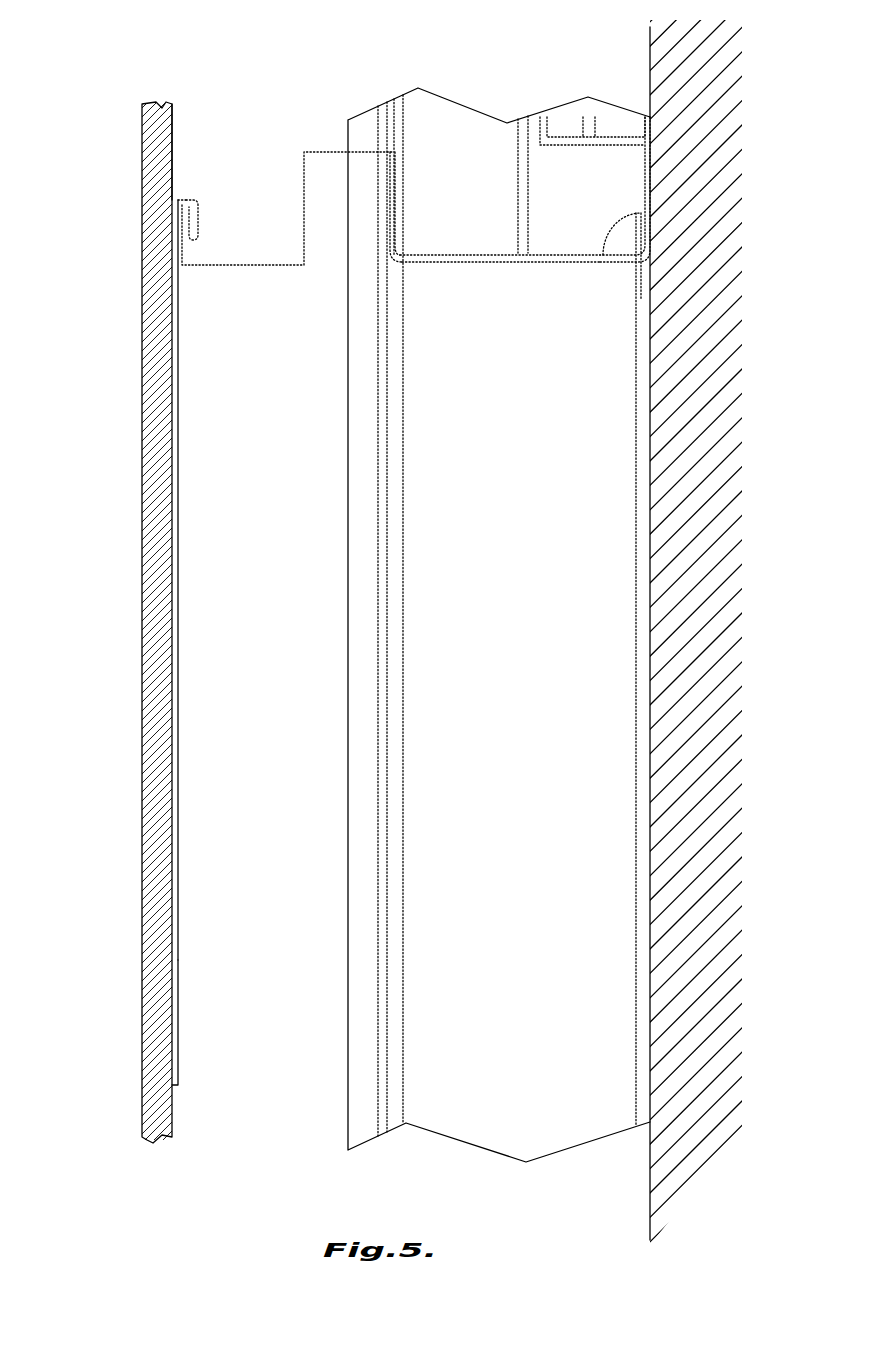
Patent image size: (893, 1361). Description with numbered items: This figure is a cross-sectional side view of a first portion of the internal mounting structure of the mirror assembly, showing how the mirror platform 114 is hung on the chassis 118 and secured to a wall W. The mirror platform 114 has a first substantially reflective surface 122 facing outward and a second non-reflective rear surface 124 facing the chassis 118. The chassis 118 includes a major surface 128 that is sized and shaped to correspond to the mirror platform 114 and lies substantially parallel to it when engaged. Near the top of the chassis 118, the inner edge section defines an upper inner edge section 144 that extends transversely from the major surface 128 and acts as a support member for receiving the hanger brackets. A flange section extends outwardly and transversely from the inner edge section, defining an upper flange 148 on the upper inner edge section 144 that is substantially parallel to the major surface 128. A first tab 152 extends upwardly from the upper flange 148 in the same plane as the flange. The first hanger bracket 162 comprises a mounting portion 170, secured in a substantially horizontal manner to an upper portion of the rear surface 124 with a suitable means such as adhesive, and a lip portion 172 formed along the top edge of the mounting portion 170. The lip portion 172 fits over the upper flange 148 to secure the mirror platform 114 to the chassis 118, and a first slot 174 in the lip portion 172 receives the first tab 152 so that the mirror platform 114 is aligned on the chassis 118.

The mirror platform 114 is at (134, 90).
The first substantially reflective surface 122 is at (142, 135).
The second non-reflective, rear surface 124 is at (173, 128).
The first opening or slot 174 is at (187, 200).
The lip portion 172 is at (198, 221).
The mounting portion 170 is at (179, 505).
The first hanger bracket 162 is at (201, 978).
The chassis 118 is at (522, 74).
The major surface 128 is at (650, 175).
The first tab 152 is at (395, 190).
The upper flange 148 is at (390, 216).
The upper inner edge section 144 is at (478, 262).
The wall W is at (702, 58).